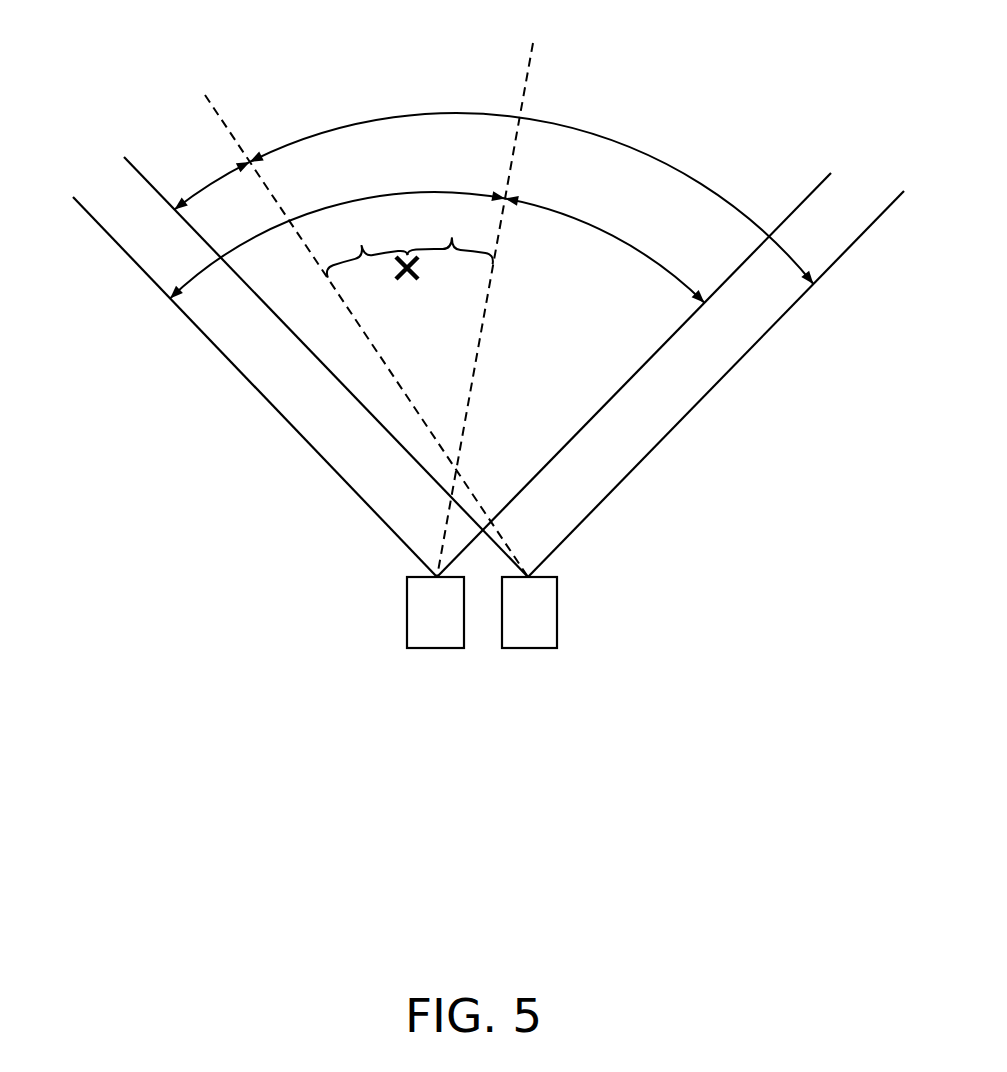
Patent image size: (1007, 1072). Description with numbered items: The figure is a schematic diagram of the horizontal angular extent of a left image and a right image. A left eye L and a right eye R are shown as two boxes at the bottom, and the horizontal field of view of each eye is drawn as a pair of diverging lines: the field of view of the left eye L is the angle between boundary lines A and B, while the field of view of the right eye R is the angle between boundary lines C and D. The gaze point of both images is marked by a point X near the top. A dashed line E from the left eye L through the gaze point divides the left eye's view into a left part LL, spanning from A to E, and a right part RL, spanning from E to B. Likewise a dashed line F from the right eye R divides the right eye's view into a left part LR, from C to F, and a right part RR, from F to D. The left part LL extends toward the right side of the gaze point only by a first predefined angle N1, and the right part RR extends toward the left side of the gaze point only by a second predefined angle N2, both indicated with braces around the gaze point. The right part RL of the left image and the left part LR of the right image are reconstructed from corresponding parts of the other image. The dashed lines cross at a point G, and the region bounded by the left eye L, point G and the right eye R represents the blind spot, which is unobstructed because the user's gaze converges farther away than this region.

The left eye L is at (435, 612).
The right eye R is at (529, 612).
The left boundary of the left eye field of view A is at (252, 372).
The right boundary of the left eye field of view B is at (634, 364).
The left boundary of the right eye field of view C is at (326, 354).
The right boundary of the right eye field of view D is at (716, 367).
The boundary between left part and right part of the left image E is at (493, 299).
The boundary between left part and right part of the right image F is at (365, 321).
The apex of blind spot region G is at (483, 452).
The left part of the left image LL is at (337, 244).
The left part of the right image LR is at (212, 180).
The right part of the left image RL is at (604, 249).
The right part of the right image RR is at (532, 198).
The first predefined angle N1 is at (449, 240).
The second predefined angle N2 is at (367, 249).